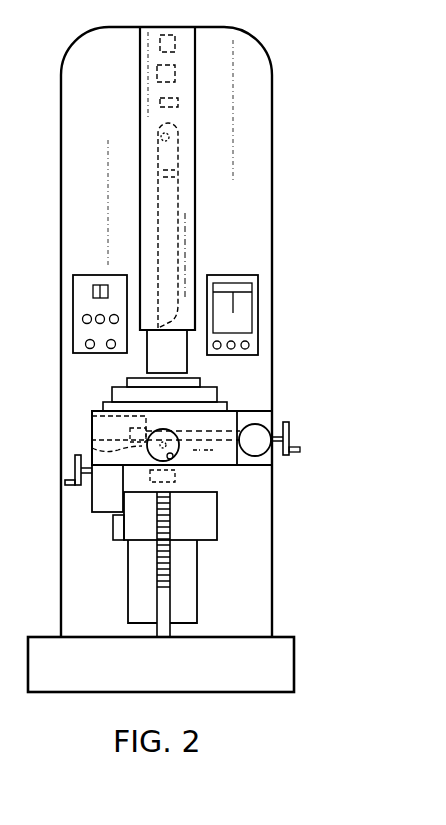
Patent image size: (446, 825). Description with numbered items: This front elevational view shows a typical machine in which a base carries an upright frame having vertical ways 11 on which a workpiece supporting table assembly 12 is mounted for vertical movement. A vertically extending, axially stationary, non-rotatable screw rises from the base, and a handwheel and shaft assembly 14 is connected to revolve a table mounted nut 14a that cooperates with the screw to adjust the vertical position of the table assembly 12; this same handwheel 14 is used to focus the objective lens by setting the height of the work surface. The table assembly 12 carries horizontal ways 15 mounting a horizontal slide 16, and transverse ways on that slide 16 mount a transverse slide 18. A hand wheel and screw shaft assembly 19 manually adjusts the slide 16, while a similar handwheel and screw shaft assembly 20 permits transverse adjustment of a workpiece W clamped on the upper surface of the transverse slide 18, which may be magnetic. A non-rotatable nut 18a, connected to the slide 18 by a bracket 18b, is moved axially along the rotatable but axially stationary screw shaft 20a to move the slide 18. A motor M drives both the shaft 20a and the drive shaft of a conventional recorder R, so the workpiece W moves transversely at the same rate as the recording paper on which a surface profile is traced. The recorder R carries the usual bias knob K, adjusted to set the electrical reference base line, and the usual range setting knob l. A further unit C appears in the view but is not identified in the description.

The control panel C is at (73, 289).
The recorder R is at (258, 298).
The range setting knob l is at (235, 345).
The bias knob K is at (249, 345).
The workpiece W is at (200, 382).
The transverse slide 18 is at (123, 392).
The horizontal slide 16 is at (218, 403).
The horizontal ways 15 is at (237, 410).
The motor M is at (274, 414).
The handwheel and screw shaft assembly 20 is at (290, 428).
The bracket 18b is at (92, 415).
The screw shaft 20a is at (92, 428).
The non-rotatable nut 18a is at (92, 448).
The handwheel and shaft assembly 14 is at (85, 482).
The table mounted nut 14a is at (150, 476).
The hand wheel and screw shaft assembly 19 is at (174, 456).
The workpiece supporting table assembly 12 is at (217, 523).
The vertical ways 11 is at (197, 602).